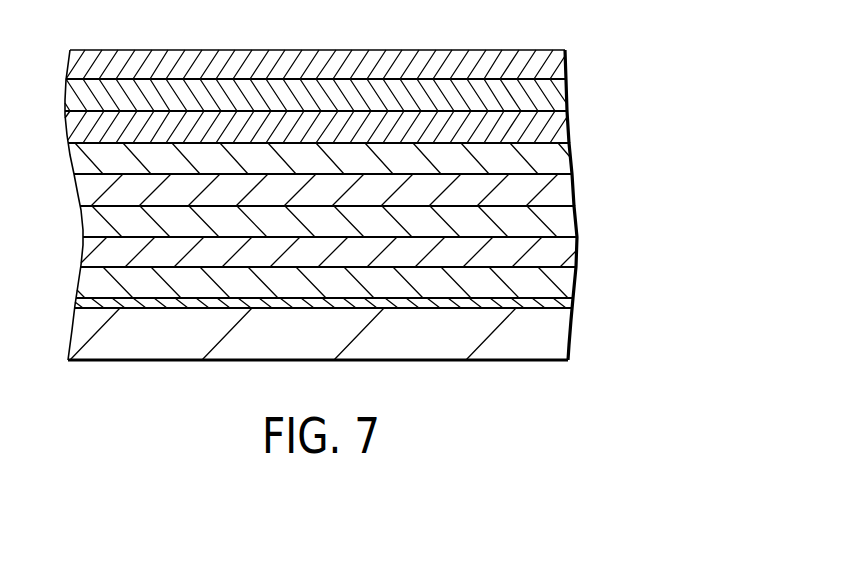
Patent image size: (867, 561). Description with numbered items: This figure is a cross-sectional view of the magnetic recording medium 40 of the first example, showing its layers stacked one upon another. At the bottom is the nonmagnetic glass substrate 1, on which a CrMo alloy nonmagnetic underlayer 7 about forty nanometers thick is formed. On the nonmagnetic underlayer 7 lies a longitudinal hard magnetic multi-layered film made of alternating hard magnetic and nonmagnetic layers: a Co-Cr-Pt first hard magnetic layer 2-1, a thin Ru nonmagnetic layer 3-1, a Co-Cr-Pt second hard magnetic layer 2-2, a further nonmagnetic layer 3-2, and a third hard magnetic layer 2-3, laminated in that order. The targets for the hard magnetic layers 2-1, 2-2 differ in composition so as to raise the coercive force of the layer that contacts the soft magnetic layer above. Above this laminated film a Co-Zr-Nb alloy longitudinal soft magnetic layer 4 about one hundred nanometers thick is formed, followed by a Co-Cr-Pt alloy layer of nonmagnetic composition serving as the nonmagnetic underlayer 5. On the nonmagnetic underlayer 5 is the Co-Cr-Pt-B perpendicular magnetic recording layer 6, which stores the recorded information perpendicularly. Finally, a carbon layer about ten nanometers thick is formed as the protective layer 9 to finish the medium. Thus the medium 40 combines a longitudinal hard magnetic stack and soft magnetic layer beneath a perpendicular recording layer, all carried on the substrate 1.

The magnetic recording medium 40 is at (722, 155).
The perpendicular magnetic recording layer 6 is at (567, 60).
The nonmagnetic underlayer 5 is at (567, 89).
The longitudinal soft magnetic layer 4 is at (568, 122).
The protective layer 9 is at (389, 220).
The third hard magnetic layer 2-3 is at (558, 155).
The nonmagnetic layer 3-2 is at (558, 188).
The second hard magnetic layer 2-2 is at (558, 220).
The nonmagnetic layer 3-1 is at (558, 251).
The first hard magnetic layer 2-1 is at (359, 282).
The nonmagnetic underlayer 7 is at (572, 302).
The substrate 1 is at (555, 343).